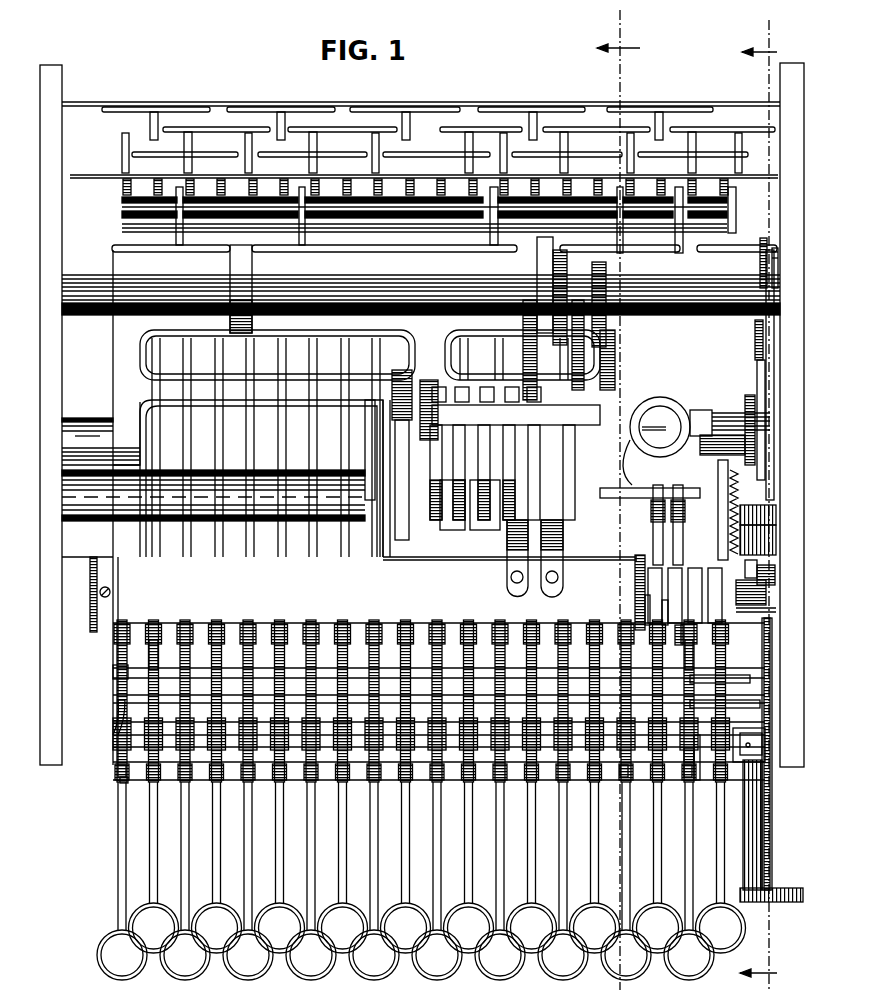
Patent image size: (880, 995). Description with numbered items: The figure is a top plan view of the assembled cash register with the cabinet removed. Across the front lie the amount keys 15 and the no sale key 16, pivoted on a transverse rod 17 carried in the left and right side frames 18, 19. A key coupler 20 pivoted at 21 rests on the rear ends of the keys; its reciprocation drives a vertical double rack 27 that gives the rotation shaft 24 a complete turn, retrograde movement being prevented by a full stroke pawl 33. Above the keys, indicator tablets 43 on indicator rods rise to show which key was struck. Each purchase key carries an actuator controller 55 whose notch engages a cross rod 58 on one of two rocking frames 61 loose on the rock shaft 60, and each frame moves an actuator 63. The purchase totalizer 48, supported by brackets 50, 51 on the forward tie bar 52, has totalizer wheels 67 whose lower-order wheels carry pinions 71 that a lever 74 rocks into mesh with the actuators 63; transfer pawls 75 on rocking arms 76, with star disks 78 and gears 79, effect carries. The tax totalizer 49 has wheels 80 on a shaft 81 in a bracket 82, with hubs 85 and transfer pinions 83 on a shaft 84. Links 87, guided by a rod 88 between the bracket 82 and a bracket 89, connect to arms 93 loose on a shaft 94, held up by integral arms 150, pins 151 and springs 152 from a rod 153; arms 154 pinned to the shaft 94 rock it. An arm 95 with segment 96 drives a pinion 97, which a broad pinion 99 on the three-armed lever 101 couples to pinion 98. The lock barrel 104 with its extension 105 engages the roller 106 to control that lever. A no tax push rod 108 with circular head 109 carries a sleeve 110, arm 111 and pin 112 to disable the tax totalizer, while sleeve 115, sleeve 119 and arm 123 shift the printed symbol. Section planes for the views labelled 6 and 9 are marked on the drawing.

The section line 6- 6 is at (758, 507).
The section line 9- 9 is at (618, 33).
The amount keys 15 is at (548, 968).
The no sale key 16 is at (745, 910).
The transverse rod 17 is at (100, 480).
The side frame 18 is at (62, 700).
The side frame 19 is at (792, 767).
The key coupler 20 is at (118, 334).
The pivot 21 is at (88, 430).
The rotation shaft 24 is at (778, 282).
The double rack 27 is at (762, 240).
The full stroke pawl 33 is at (765, 335).
The indicator tablet 43 is at (466, 127).
The purchase totalizer 48 is at (438, 385).
The tax totalizer 49 is at (648, 582).
The bracket 50 is at (650, 492).
The bracket 51 is at (370, 530).
The tie bar 52 is at (768, 595).
The actuator controller 55 is at (698, 186).
The cross rods 58 is at (124, 203).
The rock shaft 60 is at (92, 285).
The rocking frames 61 is at (130, 235).
The actuator 63 is at (560, 270).
The totalizer wheels 67 is at (565, 425).
The pinion 71 is at (568, 440).
The lever 74 is at (585, 345).
The transfer pawls 75 is at (510, 553).
The rocking arms 76 is at (560, 585).
The star disks 78 is at (480, 515).
The gears 79 is at (465, 515).
The totalizer wheels 80 is at (684, 632).
The shaft 81 is at (645, 600).
The bracket 82 is at (718, 755).
The pinions 83 is at (678, 485).
The shaft 84 is at (635, 565).
The hub 85 is at (662, 612).
The links 87 is at (175, 625).
The rod 88 is at (720, 686).
The bracket 89 is at (92, 665).
The arms 93 is at (143, 625).
The shaft 94 is at (692, 755).
The arm 95 is at (766, 740).
The segment 96 is at (772, 625).
The pinion 97 is at (770, 575).
The pinion 98 is at (755, 565).
The broad pinion 99 is at (765, 612).
The three-armed lever 101 is at (740, 480).
The lock barrel 104 is at (666, 412).
The extension 105 is at (700, 410).
The roller 106 is at (722, 436).
The push rod 108 is at (755, 825).
The circular head 109 is at (770, 888).
The sleeve 110 is at (760, 540).
The arm 111 is at (730, 475).
The pin 112 is at (760, 510).
The sleeve 115 is at (748, 395).
The sleeve 119 is at (757, 345).
The arm 123 is at (758, 380).
The integral arms 150 is at (118, 772).
The pins 151 is at (120, 782).
The springs 152 is at (688, 778).
The rod 153 is at (705, 705).
The arms 154 is at (114, 732).